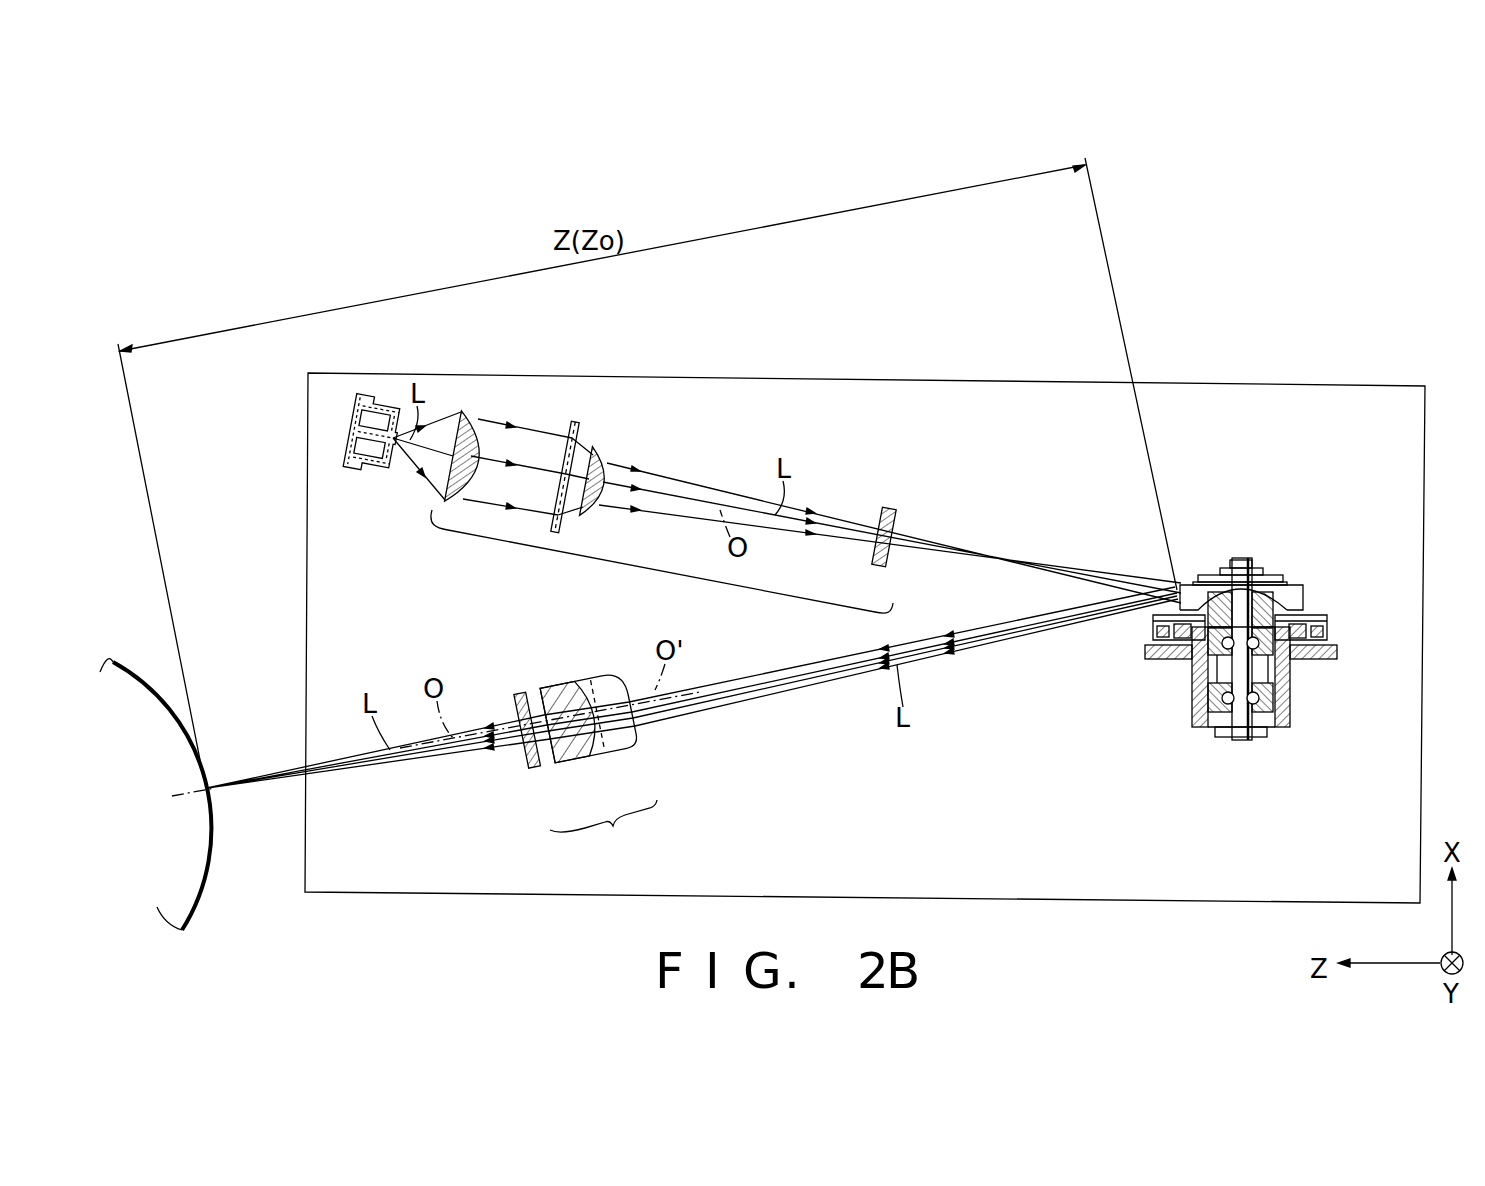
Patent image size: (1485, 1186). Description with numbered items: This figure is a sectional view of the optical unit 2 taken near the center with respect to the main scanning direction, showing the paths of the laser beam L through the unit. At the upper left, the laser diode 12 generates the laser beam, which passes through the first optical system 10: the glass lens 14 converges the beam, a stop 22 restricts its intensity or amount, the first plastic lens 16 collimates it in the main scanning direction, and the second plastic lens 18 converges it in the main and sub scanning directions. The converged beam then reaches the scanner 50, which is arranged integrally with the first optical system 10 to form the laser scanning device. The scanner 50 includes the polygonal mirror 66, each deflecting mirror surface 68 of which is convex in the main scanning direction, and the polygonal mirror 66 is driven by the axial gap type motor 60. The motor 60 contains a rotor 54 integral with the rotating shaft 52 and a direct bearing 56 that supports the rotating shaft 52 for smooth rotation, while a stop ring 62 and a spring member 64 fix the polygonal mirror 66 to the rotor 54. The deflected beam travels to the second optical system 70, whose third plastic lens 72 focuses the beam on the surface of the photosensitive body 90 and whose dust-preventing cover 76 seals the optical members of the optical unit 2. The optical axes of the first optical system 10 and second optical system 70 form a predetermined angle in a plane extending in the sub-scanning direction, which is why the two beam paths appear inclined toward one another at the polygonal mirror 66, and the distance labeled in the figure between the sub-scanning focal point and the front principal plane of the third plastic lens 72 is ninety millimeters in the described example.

The optical unit 2 is at (1210, 385).
The first optical system 10 is at (662, 562).
The laser diode 12 is at (353, 474).
The glass lens 14 is at (466, 408).
The first plastic lens 16 is at (610, 452).
The second plastic lens 18 is at (893, 507).
The stop 22 is at (580, 420).
The scanner 50 is at (1302, 720).
The rotating shaft 52 is at (1242, 560).
The rotor 54 is at (1328, 628).
The direct bearing 56 is at (1205, 725).
The axial gap type motor 60 is at (1192, 688).
The stop ring 62 is at (1262, 568).
The spring member 64 is at (1285, 578).
The polygonal mirror 66 is at (1187, 585).
The deflecting mirror surface 68 is at (1303, 600).
The second optical system 70 is at (603, 831).
The third plastic lens 72 is at (608, 752).
The dust-preventing cover 76 is at (538, 760).
The photosensitive body 90 is at (206, 883).